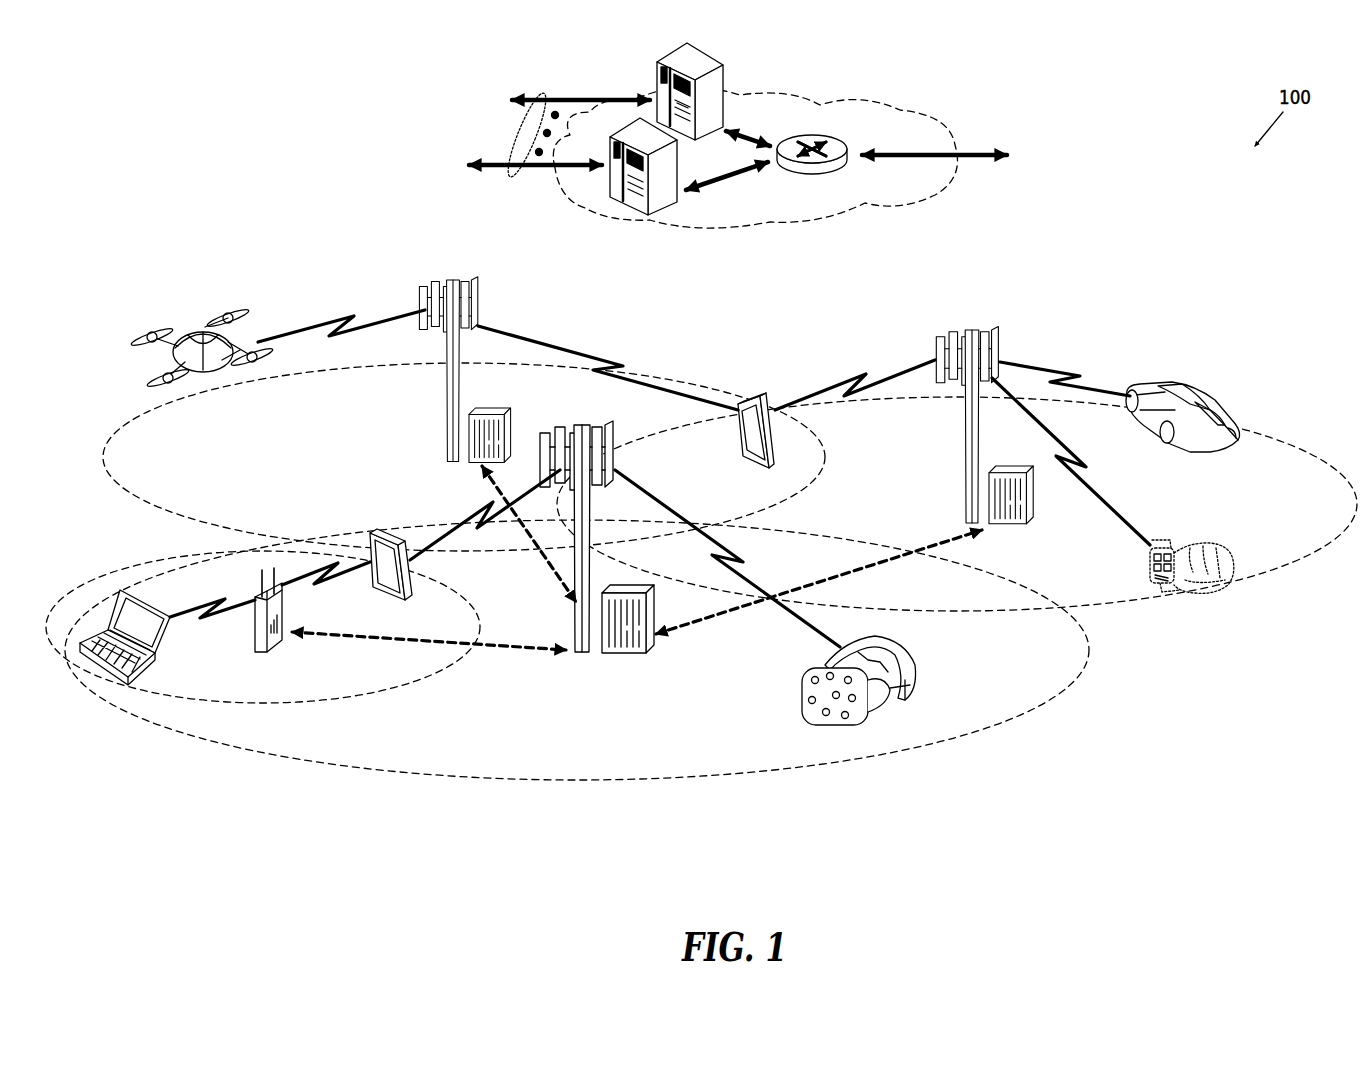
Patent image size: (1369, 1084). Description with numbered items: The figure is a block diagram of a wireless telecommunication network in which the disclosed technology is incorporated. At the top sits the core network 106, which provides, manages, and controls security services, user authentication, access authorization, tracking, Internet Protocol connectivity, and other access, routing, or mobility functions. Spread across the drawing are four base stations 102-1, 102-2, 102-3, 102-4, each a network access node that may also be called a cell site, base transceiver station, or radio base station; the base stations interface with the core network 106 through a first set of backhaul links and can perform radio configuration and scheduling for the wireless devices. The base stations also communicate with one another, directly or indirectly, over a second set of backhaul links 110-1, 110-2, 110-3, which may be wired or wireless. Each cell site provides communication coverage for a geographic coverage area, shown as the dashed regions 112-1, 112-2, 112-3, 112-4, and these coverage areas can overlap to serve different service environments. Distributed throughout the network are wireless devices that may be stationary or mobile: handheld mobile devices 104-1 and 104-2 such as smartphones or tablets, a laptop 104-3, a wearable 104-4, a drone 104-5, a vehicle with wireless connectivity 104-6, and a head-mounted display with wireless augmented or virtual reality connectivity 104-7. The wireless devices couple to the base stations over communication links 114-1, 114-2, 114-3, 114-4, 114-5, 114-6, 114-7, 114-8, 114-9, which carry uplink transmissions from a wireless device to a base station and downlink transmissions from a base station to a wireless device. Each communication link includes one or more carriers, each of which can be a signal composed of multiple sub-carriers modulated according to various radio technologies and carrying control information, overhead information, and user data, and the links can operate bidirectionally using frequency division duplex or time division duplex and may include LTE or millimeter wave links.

The core network 106 is at (845, 222).
The base station 102-1 is at (580, 656).
The base station 102-2 is at (445, 405).
The base station 102-3 is at (962, 440).
The base station 102-4 is at (250, 648).
The handheld mobile device 104-1 is at (445, 578).
The handheld mobile device 104-2 is at (735, 440).
The laptop 104-3 is at (100, 675).
The wearable 104-4 is at (1160, 543).
The drone 104-5 is at (215, 380).
The vehicle with wireless connectivity 104-6 is at (1200, 395).
The head-mounted display 104-7 is at (920, 665).
The backhaul link 110-1 is at (330, 640).
The backhaul link 110-2 is at (885, 566).
The backhaul link 110-3 is at (545, 570).
The geographic coverage area 112-1 is at (503, 780).
The geographic coverage area 112-2 is at (385, 695).
The geographic coverage area 112-3 is at (160, 508).
The geographic coverage area 112-4 is at (1262, 442).
The communication link 114-1 is at (745, 568).
The communication link 114-2 is at (463, 514).
The communication link 114-3 is at (200, 615).
The communication link 114-4 is at (328, 585).
The communication link 114-5 is at (330, 320).
The communication link 114-6 is at (610, 365).
The communication link 114-7 is at (852, 380).
The communication link 114-8 is at (1090, 488).
The communication link 114-9 is at (1065, 372).